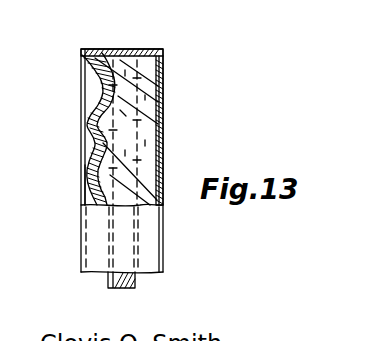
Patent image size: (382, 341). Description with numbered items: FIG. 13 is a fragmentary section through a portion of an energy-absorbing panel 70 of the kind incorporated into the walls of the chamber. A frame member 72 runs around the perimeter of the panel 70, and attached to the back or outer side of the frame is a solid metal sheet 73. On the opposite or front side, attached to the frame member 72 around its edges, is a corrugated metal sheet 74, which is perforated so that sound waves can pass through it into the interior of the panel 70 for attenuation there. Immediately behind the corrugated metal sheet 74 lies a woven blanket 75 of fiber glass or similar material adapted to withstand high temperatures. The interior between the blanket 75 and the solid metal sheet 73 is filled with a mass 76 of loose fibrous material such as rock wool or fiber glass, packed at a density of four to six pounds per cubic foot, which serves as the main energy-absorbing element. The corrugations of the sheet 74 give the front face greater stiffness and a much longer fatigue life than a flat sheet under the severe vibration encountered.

The panel 70 is at (165, 125).
The frame member 72 is at (143, 50).
The solid metal sheet 73 is at (167, 90).
The corrugated metal sheet 74 is at (90, 176).
The blanket 75 is at (90, 126).
The mass of loose fibrous materials 76 is at (166, 158).